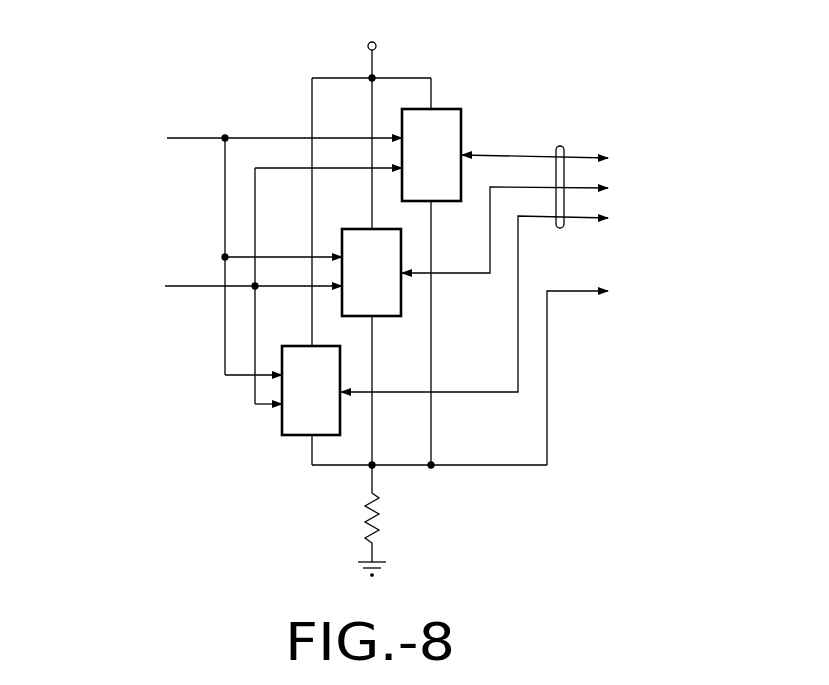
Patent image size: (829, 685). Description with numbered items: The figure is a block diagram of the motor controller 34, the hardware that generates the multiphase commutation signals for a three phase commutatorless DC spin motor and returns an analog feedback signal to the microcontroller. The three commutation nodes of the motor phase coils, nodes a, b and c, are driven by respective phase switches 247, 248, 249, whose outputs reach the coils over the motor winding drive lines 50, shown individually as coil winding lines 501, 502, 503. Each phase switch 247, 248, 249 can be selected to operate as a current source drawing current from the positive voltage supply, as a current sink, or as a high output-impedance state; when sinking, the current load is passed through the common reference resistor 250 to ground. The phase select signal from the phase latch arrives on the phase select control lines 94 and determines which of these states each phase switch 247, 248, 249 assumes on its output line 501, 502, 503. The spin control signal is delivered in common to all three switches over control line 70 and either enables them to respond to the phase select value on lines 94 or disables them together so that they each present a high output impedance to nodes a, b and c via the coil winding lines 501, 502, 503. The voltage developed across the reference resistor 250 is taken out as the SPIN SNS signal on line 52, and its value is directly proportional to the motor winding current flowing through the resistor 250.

The motor controller 34 is at (180, 542).
The phase select control lines 94 is at (200, 138).
The spin control line 70 is at (198, 286).
The phase switch 247 is at (455, 109).
The phase switch 248 is at (364, 229).
The phase switch 249 is at (300, 437).
The reference resistor 250 is at (375, 518).
The motor winding drive lines 50 is at (560, 230).
The coil winding line 501 is at (471, 154).
The coil winding line 502 is at (452, 275).
The coil winding line 503 is at (452, 393).
The SPIN SNS line 52 is at (547, 418).